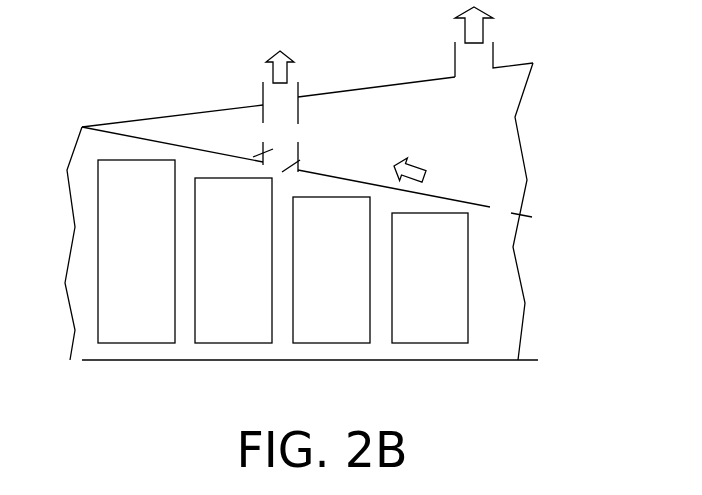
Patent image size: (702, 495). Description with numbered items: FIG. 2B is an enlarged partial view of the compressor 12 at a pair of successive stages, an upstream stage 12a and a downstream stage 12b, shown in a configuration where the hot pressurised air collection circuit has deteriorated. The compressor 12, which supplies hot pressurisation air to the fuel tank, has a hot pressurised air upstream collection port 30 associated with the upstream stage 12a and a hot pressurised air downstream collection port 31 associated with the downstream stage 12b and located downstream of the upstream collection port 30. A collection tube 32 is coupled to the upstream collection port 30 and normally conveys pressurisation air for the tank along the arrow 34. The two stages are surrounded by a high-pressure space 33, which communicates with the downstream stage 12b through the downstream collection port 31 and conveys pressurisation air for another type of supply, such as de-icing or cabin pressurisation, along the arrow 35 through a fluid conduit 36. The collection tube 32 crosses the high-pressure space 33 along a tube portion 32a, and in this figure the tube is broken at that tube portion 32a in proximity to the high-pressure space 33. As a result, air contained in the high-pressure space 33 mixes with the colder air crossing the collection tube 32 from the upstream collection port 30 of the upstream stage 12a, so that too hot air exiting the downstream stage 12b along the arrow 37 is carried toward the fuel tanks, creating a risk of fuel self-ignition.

The compressor 12 is at (498, 310).
The upstream stage 12a is at (245, 332).
The downstream stage 12b is at (442, 333).
The upstream collection port 30 is at (300, 160).
The downstream collection port 31 is at (500, 208).
The collection tube 32 is at (262, 148).
The tube portion 32a is at (293, 132).
The high-pressure space 33 is at (510, 140).
The arrow 34 is at (280, 70).
The arrow 35 is at (473, 35).
The fluid conduit 36 is at (467, 63).
The arrow 37 is at (418, 162).